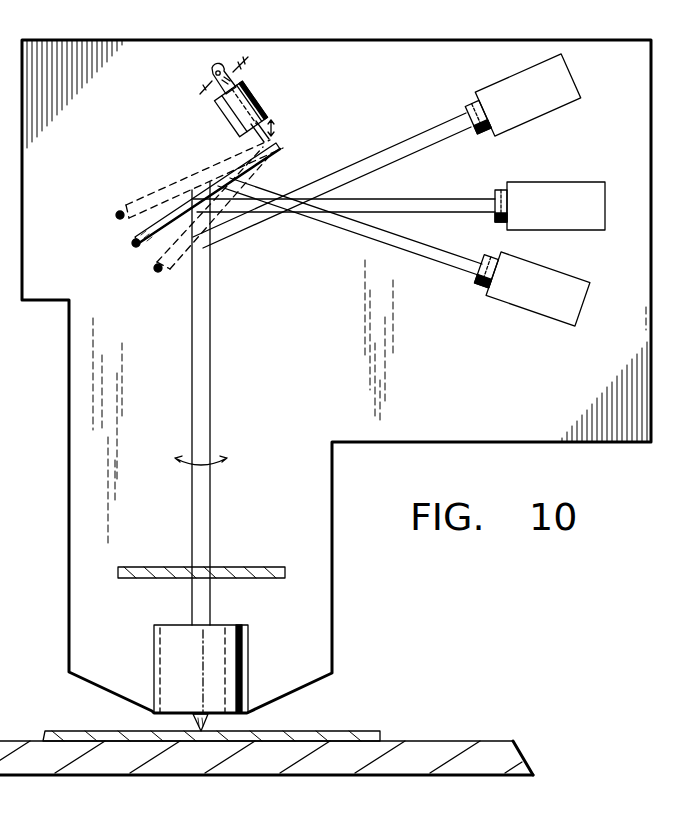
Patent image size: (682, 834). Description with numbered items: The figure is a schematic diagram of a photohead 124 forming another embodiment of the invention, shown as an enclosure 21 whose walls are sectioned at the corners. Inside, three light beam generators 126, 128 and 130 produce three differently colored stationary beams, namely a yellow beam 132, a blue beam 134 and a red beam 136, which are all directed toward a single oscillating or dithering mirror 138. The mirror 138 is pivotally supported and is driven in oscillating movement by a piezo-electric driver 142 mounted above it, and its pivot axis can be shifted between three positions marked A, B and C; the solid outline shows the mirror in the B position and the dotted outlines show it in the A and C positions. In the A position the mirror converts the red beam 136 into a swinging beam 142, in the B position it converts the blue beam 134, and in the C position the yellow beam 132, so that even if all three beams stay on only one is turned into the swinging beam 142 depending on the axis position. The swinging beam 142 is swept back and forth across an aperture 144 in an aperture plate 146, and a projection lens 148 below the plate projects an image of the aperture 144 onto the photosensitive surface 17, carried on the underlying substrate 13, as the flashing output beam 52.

The substrate 13 is at (497, 750).
The photosensitive surface 17 is at (363, 731).
The exposure apparatus 21 is at (591, 40).
The flashing output beam 52 is at (205, 723).
The photohead 124 is at (478, 40).
The light beam generator 126 is at (540, 115).
The light beam generator 128 is at (570, 182).
The light beam generator 130 is at (554, 270).
The yellow stationary beam 132 is at (428, 130).
The blue stationary beam 134 is at (472, 198).
The red stationary beam 136 is at (483, 260).
The oscillating mirror 138 is at (180, 302).
The piezo-electric driver 142 is at (261, 96).
The aperture 144 is at (200, 566).
The aperture plate 146 is at (270, 567).
The projection lens 148 is at (250, 650).